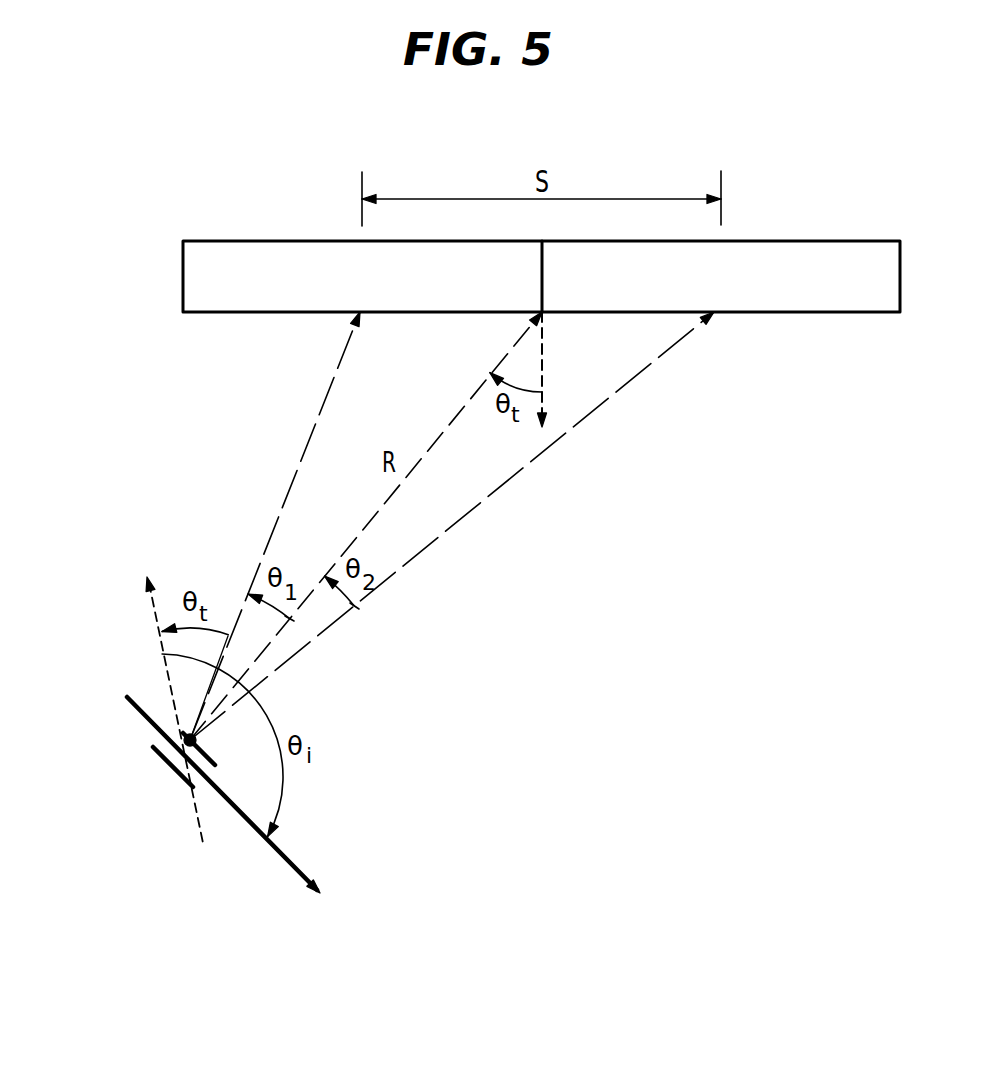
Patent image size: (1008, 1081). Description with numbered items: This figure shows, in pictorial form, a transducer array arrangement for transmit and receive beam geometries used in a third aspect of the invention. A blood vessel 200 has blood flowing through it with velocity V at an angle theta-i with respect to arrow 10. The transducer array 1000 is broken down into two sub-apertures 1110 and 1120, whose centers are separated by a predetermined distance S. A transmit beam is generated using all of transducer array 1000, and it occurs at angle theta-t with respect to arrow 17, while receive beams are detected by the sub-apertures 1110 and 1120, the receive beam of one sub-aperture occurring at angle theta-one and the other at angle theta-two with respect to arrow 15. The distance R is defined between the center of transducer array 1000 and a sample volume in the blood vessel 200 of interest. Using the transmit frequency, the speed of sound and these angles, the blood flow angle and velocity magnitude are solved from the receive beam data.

The transducer array 1000 is at (486, 236).
The sub-aperture 1110 is at (257, 241).
The sub-aperture 1120 is at (853, 240).
The arrow 15 is at (448, 423).
The arrow 17 is at (540, 355).
The arrow 10 is at (155, 622).
The blood vessel 200 is at (153, 747).